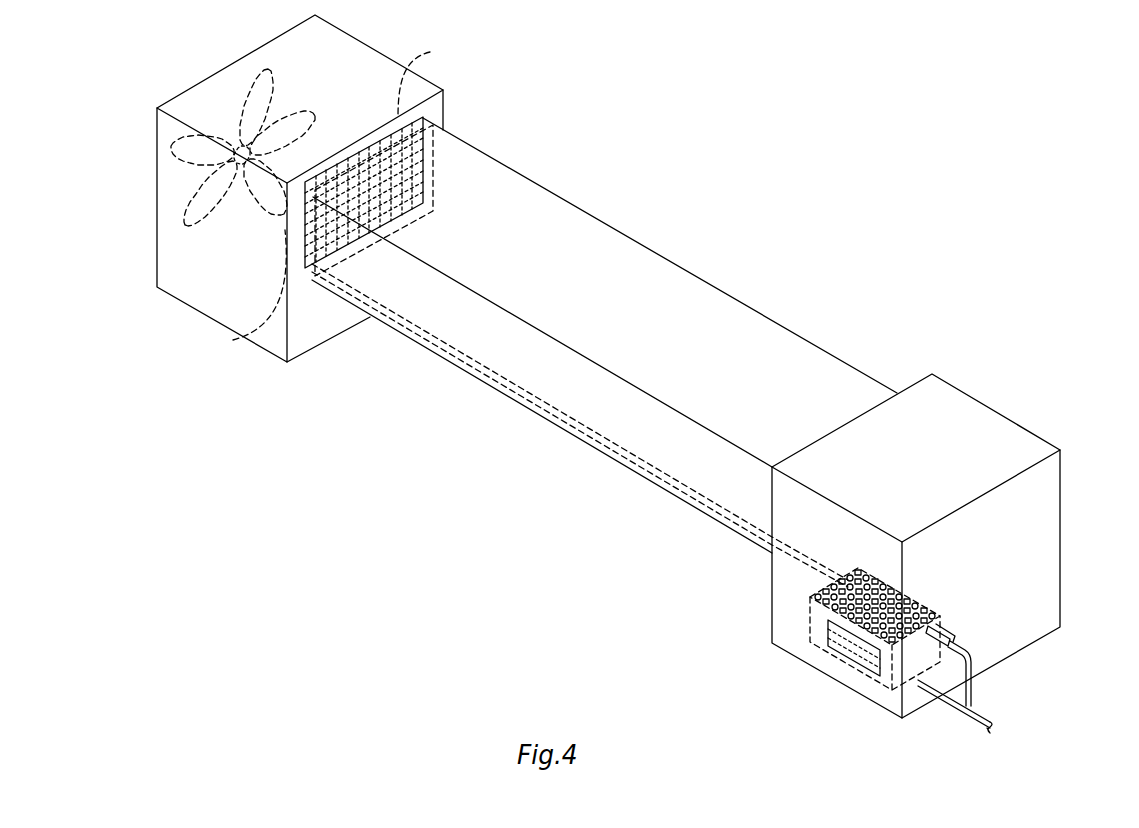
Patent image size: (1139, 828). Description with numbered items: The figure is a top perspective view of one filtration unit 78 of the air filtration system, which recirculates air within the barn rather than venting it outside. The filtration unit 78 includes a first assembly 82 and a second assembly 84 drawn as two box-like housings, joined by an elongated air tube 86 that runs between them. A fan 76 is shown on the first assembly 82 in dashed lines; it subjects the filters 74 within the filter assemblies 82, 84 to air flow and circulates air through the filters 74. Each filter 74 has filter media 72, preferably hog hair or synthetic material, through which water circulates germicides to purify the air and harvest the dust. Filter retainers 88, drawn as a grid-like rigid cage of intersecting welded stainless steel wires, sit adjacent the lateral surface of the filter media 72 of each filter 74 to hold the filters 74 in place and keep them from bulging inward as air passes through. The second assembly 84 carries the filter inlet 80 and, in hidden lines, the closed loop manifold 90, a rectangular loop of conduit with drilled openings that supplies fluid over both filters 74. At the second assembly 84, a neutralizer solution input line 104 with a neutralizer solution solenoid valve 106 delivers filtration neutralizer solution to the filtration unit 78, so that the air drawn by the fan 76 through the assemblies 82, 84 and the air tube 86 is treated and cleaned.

The filter media 72 is at (233, 340).
The filter 74 is at (438, 160).
The fan 76 is at (185, 213).
The filtration unit 78 is at (775, 192).
The filter inlet 80 is at (868, 708).
The first assembly 82 is at (1012, 402).
The second assembly 84 is at (118, 35).
The air tube 86 is at (625, 323).
The filter retainer 88 is at (424, 52).
The closed loop manifold 90 is at (867, 672).
The neutralizer solution input line 104 is at (987, 717).
The neutralizer solution solenoid valve 106 is at (947, 623).